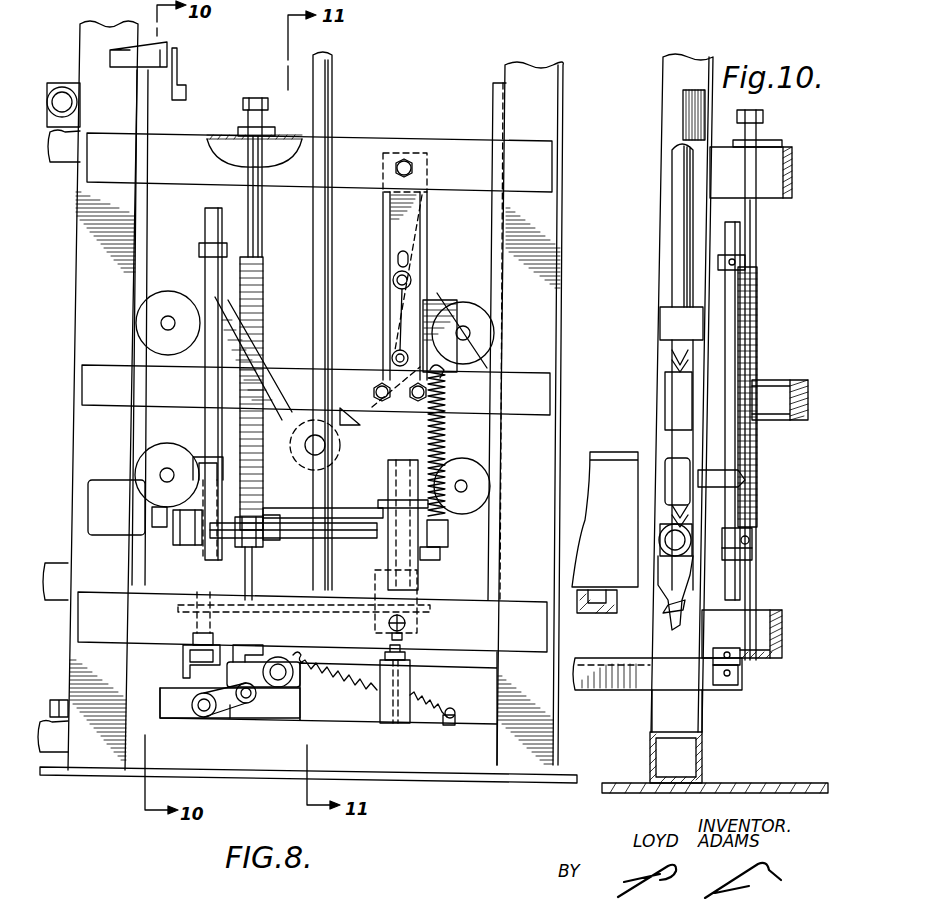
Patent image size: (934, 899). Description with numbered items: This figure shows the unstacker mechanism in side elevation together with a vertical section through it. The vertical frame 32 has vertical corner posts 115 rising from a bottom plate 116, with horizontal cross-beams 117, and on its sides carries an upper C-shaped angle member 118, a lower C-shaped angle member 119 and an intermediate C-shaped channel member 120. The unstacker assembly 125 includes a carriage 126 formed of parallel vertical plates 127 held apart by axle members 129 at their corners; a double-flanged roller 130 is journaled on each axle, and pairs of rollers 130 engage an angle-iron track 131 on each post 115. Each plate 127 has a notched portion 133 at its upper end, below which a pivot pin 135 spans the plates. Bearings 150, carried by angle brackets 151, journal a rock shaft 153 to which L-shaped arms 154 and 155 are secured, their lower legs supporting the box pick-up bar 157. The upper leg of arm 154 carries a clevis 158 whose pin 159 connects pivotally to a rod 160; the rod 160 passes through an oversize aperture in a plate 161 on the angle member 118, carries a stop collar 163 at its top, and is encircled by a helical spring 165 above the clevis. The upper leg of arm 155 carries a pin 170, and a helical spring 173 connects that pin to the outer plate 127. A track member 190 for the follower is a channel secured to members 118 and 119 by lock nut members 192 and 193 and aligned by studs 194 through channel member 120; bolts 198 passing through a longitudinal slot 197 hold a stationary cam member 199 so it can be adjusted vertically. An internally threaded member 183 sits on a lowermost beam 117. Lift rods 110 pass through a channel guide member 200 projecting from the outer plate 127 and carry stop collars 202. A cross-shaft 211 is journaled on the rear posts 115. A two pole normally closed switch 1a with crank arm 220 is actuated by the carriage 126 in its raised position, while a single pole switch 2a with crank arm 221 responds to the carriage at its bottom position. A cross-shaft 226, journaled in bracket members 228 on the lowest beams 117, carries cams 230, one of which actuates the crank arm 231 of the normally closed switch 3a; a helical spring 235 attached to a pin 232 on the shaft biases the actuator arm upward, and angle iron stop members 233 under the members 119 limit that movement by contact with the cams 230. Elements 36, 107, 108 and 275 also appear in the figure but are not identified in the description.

In FIG. 8, the two pole normally closed switch 1a is at (135, 50).
In FIG. 8, the single pole normally closed switch 2a is at (108, 528).
In FIG. 8, the single pole switch 3a is at (174, 722).
In FIG. 8, the vertical frame 32 is at (566, 86).
In FIG. 10, the bracket 36 is at (590, 613).
In FIG. 8, the stop 107 is at (192, 643).
In FIG. 8, the bracket 108 is at (183, 665).
In FIG. 10, the bracket 108 is at (622, 688).
In FIG. 8, the lift rod 110 is at (206, 277).
In FIG. 10, the lift rod 110 is at (741, 286).
In FIG. 8, the vertical corner post 115 is at (300, 395).
In FIG. 10, the vertical corner post 115 is at (690, 713).
In FIG. 8, the bottom plate 116 is at (424, 780).
In FIG. 10, the bottom plate 116 is at (788, 787).
In FIG. 8, the horizontal cross-beam 117 is at (328, 708).
In FIG. 10, the horizontal cross-beam 117 is at (702, 755).
In FIG. 8, the upper C-shaped angle member 118 is at (319, 162).
In FIG. 10, the upper C-shaped angle member 118 is at (792, 173).
In FIG. 8, the lower C-shaped angle member 119 is at (312, 622).
In FIG. 10, the lower C-shaped angle member 119 is at (782, 637).
In FIG. 8, the intermediate C-shaped channel member 120 is at (316, 390).
In FIG. 10, the intermediate C-shaped channel member 120 is at (810, 404).
In FIG. 8, the unstacker assembly 125 is at (462, 290).
In FIG. 8, the carriage 126 is at (492, 356).
In FIG. 10, the carriage 126 is at (648, 393).
In FIG. 8, the vertical plate 127 is at (388, 374).
In FIG. 10, the vertical plate 127 is at (665, 372).
In FIG. 8, the axle member 129 is at (162, 323).
In FIG. 8, the double-flanged roller 130 is at (145, 338).
In FIG. 10, the double-flanged roller 130 is at (672, 332).
In FIG. 8, the track 131 is at (140, 200).
In FIG. 10, the track 131 is at (663, 118).
In FIG. 8, the notched portion 133 is at (343, 420).
In FIG. 8, the pivot pin 135 is at (324, 453).
In FIG. 8, the bearing 150 is at (182, 547).
In FIG. 10, the bearing 150 is at (660, 528).
In FIG. 8, the angle bracket 151 is at (223, 525).
In FIG. 8, the rock shaft 153 is at (337, 530).
In FIG. 10, the rock shaft 153 is at (665, 547).
In FIG. 8, the L-shaped arm 154 is at (252, 575).
In FIG. 10, the L-shaped arm 154 is at (668, 574).
In FIG. 8, the L-shaped arm 155 is at (402, 586).
In FIG. 8, the box pick-up bar 157 is at (326, 87).
In FIG. 10, the box pick-up bar 157 is at (680, 615).
In FIG. 8, the clevis 158 is at (256, 518).
In FIG. 10, the clevis 158 is at (752, 560).
In FIG. 8, the pin 159 is at (282, 528).
In FIG. 10, the pin 159 is at (750, 534).
In FIG. 8, the rod 160 is at (250, 196).
In FIG. 10, the rod 160 is at (757, 233).
In FIG. 8, the plate 161 is at (240, 130).
In FIG. 10, the plate 161 is at (782, 144).
In FIG. 8, the stop collar 163 is at (258, 98).
In FIG. 10, the stop collar 163 is at (763, 116).
In FIG. 8, the helical spring 165 is at (264, 278).
In FIG. 10, the helical spring 165 is at (758, 307).
In FIG. 8, the pin 170 is at (442, 536).
In FIG. 8, the helical spring 173 is at (446, 446).
In FIG. 8, the internally threaded member 183 is at (396, 676).
In FIG. 8, the track member 190 is at (380, 230).
In FIG. 8, the lock nut member 192 is at (396, 168).
In FIG. 8, the lock nut member 193 is at (390, 635).
In FIG. 8, the stud 194 is at (390, 4).
In FIG. 8, the longitudinal slot 197 is at (397, 298).
In FIG. 8, the bolt 198 is at (393, 278).
In FIG. 8, the stationary cam member 199 is at (411, 260).
In FIG. 8, the channel guide member 200 is at (195, 458).
In FIG. 10, the channel guide member 200 is at (742, 472).
In FIG. 8, the stop collar 202 is at (199, 248).
In FIG. 10, the stop collar 202 is at (731, 262).
In FIG. 8, the cross-shaft 211 is at (60, 100).
In FIG. 8, the crank arm 220 is at (180, 74).
In FIG. 8, the crank arm 221 is at (163, 528).
In FIG. 8, the cross-shaft 226 is at (278, 680).
In FIG. 8, the bracket member 228 is at (273, 715).
In FIG. 8, the cam 230 is at (240, 662).
In FIG. 8, the crank arm 231 is at (212, 718).
In FIG. 8, the pin 232 is at (292, 653).
In FIG. 8, the angle iron stop member 233 is at (258, 648).
In FIG. 8, the helical spring 235 is at (348, 690).
In FIG. 10, the block 275 is at (609, 448).